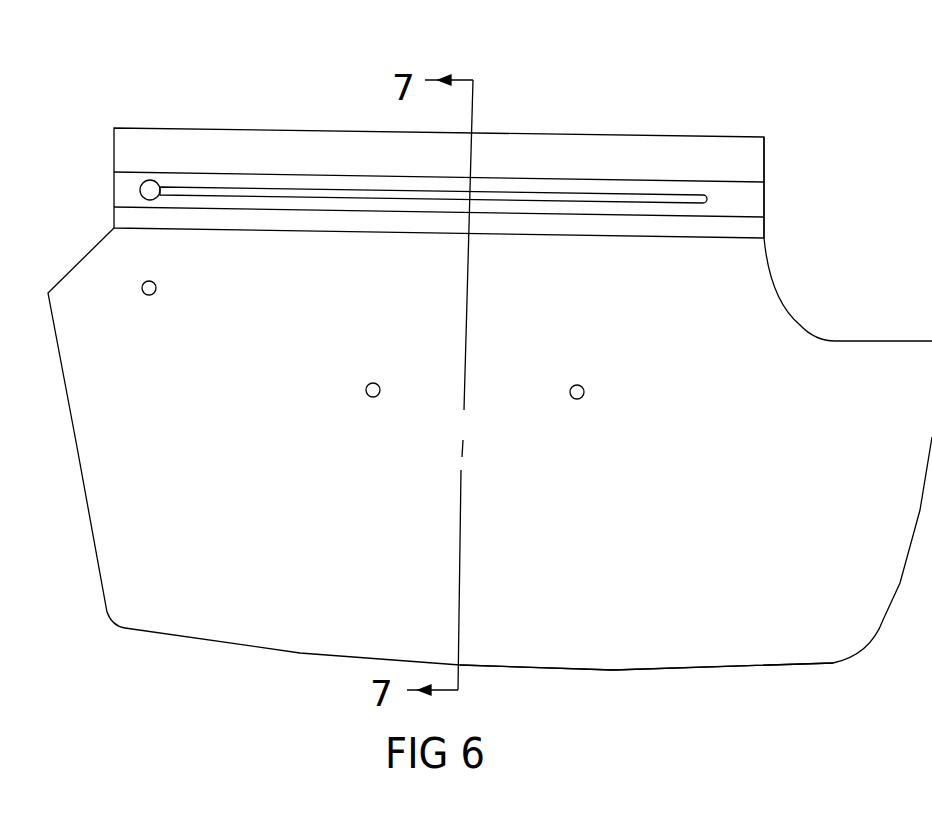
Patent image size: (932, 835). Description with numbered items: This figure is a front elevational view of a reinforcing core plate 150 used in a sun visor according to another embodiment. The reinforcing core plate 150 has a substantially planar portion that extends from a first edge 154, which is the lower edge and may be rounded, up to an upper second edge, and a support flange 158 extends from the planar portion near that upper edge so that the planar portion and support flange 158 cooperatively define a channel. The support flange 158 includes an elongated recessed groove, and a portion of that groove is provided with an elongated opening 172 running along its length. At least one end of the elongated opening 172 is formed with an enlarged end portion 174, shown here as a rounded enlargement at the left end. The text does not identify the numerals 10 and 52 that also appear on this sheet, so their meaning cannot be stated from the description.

The cabinet assembly 10 is at (20, 30).
The panel 52 is at (133, 443).
The reinforcing core plate 150 is at (781, 99).
The first edge 154 is at (583, 673).
The support flange 158 is at (772, 150).
The elongated opening 172 is at (281, 197).
The enlarged end portion 174 is at (152, 186).